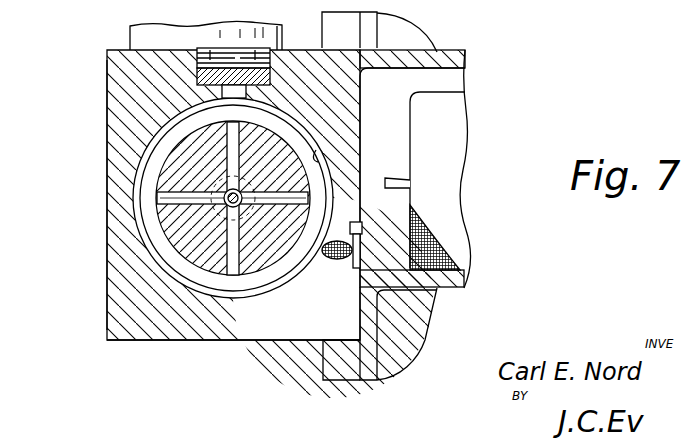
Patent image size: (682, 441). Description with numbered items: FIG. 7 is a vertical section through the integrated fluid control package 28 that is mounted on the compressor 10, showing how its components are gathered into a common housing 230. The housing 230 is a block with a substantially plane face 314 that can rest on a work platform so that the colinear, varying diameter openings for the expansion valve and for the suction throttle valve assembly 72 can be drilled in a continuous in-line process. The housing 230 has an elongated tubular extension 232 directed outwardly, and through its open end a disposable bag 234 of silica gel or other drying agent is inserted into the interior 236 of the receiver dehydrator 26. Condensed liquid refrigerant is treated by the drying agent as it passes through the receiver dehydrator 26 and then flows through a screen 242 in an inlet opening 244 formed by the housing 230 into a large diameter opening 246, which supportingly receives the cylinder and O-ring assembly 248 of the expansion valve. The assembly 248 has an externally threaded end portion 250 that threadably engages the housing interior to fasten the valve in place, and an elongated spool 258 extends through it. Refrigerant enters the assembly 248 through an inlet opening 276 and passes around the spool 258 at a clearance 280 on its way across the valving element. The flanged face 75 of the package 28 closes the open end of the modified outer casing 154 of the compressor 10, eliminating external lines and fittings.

The compressor unit 10 is at (437, 307).
The receiver dehydrator 26 is at (447, 52).
The integrated fluid control package 28 is at (240, 341).
The suction throttle valve assembly 72 is at (130, 35).
The flanged face 75 is at (343, 365).
The outer casing 154 is at (415, 320).
The common housing 230 is at (122, 312).
The tubular extension 232 is at (466, 278).
The disposable bag 234 is at (455, 108).
The interior 236 is at (448, 77).
The screen 242 is at (363, 238).
The inlet opening 244 is at (310, 267).
The large diameter opening 246 is at (318, 162).
The cylinder and O-ring assembly 248 is at (152, 168).
The externally threaded end portion 250 is at (145, 240).
The elongated spool 258 is at (157, 200).
The inlet opening 276 is at (237, 268).
The clearance 280 is at (228, 212).
The plane face 314 is at (107, 100).